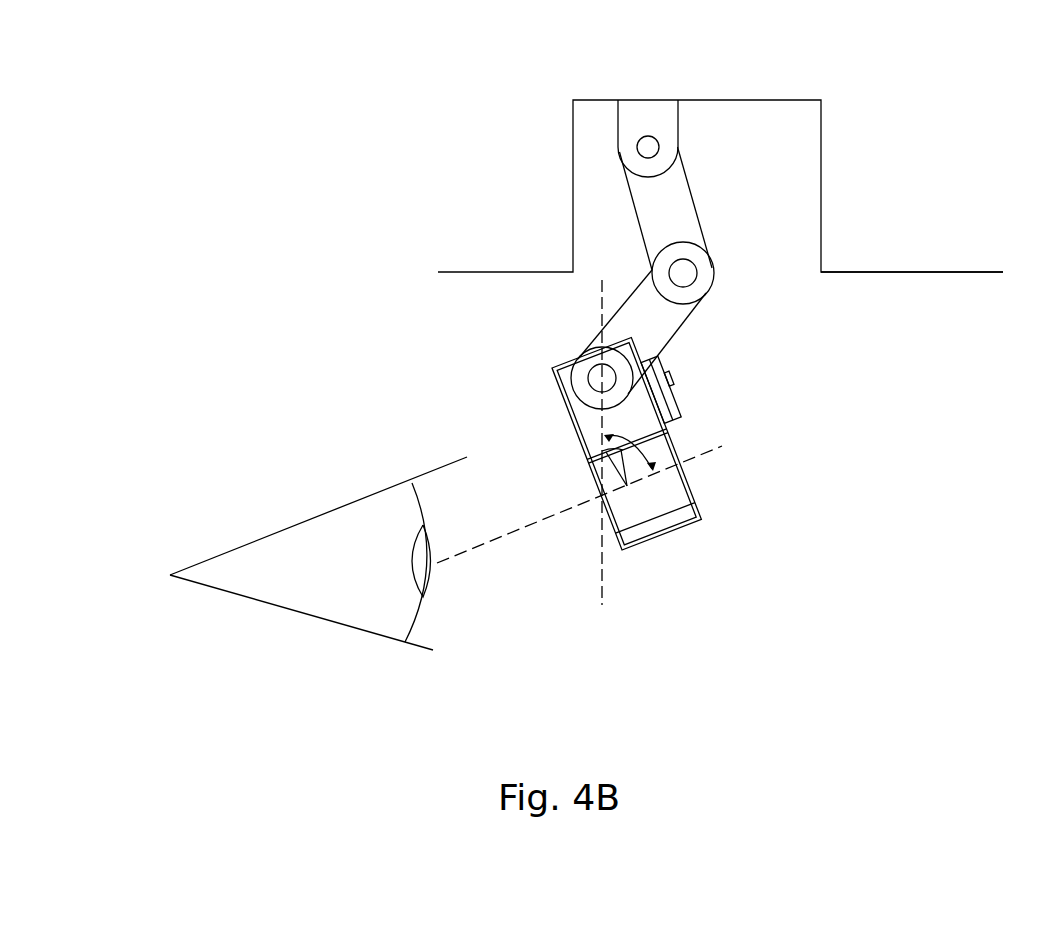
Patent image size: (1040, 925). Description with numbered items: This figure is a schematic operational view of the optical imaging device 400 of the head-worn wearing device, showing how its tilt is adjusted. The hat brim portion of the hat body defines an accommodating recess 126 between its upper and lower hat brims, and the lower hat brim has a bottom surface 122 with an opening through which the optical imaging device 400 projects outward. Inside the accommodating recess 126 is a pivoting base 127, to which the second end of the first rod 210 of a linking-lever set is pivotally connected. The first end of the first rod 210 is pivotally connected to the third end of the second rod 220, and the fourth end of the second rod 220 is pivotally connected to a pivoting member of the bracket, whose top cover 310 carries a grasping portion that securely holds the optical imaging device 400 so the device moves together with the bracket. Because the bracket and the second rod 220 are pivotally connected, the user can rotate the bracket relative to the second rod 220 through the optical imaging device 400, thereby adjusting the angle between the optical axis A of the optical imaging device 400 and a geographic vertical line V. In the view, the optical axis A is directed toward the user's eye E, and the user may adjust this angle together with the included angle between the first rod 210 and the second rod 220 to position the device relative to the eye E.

The bottom surface 122 is at (948, 273).
The accommodating recess 126 is at (828, 183).
The pivoting base 127 is at (650, 115).
The first rod 210 is at (654, 212).
The second rod 220 is at (663, 340).
The top cover 310 is at (572, 393).
The optical imaging device 400 is at (668, 522).
The optical axis A is at (530, 523).
The geographic vertical line V is at (602, 574).
The eye E is at (330, 608).